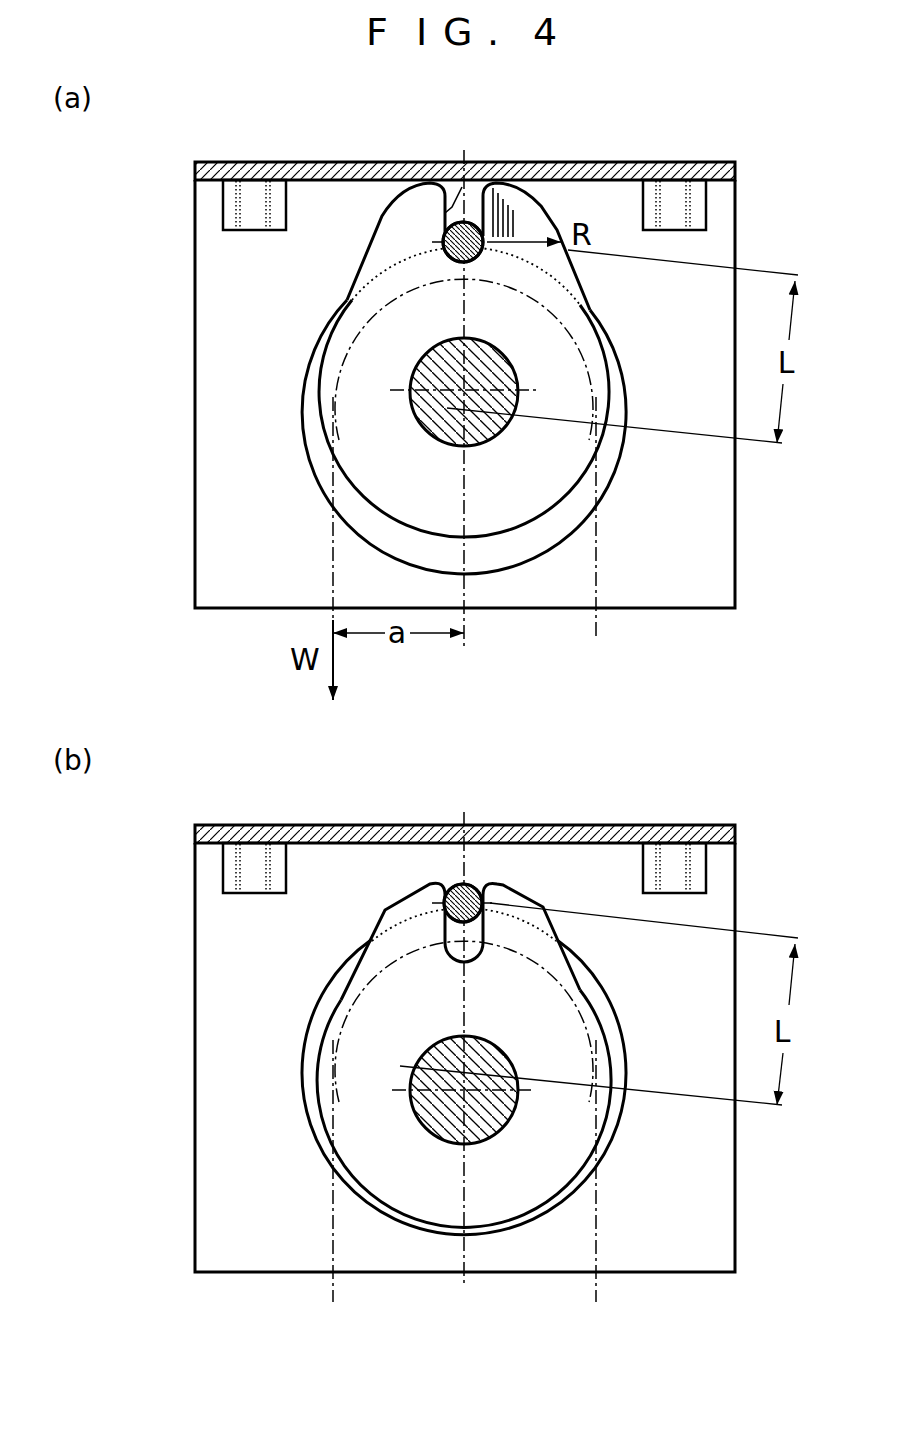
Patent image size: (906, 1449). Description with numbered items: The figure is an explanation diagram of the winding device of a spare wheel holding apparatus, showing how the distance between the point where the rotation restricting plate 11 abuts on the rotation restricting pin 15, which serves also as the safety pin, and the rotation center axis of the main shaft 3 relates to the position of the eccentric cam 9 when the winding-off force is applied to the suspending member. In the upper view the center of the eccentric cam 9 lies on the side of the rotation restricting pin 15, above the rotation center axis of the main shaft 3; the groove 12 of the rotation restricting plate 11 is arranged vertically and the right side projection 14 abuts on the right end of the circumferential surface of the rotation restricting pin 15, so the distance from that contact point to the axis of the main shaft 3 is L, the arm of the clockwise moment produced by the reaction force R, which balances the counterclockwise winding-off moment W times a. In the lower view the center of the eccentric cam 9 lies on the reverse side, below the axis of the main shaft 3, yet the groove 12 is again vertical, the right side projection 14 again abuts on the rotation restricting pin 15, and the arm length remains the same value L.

The main shaft 3 is at (412, 398).
The eccentric cam 9 is at (440, 350).
The rotation restricting plate 11 is at (362, 260).
The groove 12 is at (457, 198).
The right side projection 14 is at (537, 203).
The rotation restricting pin 15 is at (464, 392).